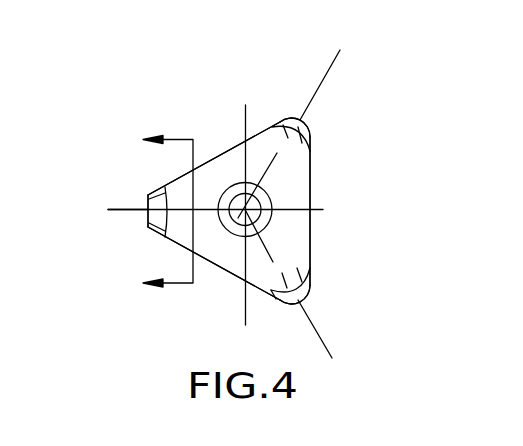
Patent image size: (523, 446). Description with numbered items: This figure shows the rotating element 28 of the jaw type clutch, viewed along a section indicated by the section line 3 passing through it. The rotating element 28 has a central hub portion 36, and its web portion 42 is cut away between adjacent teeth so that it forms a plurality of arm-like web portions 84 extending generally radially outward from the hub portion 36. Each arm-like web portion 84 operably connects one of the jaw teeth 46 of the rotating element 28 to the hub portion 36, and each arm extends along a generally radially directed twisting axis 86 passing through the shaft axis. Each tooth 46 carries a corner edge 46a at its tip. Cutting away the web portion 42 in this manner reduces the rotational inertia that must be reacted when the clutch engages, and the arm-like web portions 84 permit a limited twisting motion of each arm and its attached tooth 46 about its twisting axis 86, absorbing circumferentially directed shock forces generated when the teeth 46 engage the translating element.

The section line 3- 3 is at (154, 212).
The rotating element 28 is at (302, 174).
The hub portion 36 is at (268, 226).
The web portion 42 is at (302, 200).
The jaw teeth 46 is at (148, 220).
The corner cutting edge 46a is at (273, 126).
The arm-like web portions 84 is at (228, 148).
The twisting axis 86 is at (118, 207).